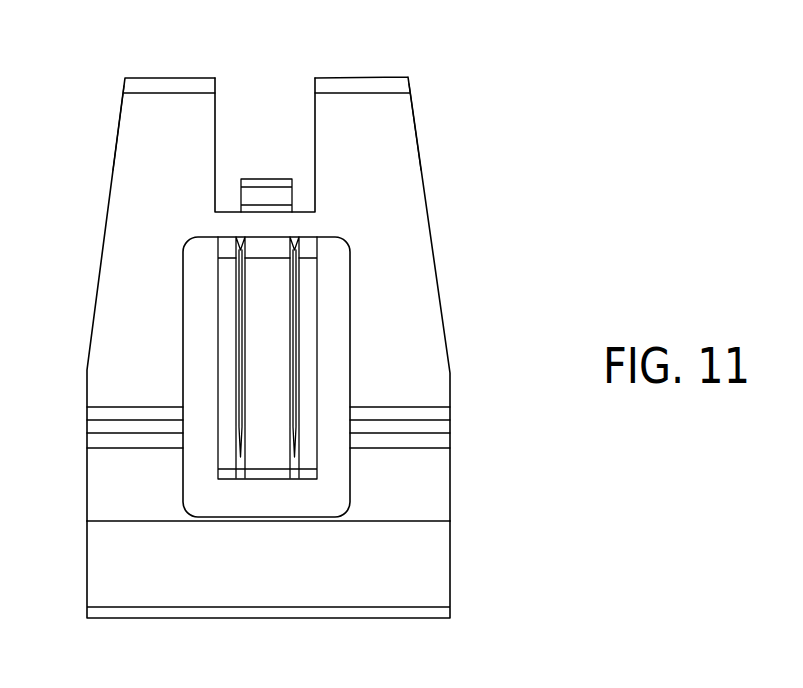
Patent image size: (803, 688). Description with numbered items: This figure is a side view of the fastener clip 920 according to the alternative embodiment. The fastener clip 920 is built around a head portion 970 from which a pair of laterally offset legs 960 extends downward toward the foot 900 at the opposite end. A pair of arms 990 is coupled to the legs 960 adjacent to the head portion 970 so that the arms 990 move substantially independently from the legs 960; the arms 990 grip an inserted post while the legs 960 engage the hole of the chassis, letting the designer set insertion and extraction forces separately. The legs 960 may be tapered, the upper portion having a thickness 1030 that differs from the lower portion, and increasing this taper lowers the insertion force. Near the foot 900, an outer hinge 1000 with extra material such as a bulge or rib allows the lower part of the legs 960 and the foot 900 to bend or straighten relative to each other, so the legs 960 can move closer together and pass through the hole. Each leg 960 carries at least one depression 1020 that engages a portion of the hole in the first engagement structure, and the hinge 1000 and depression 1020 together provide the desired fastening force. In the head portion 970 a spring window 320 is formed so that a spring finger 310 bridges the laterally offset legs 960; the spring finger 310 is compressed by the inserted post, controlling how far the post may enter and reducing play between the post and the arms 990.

The foot 900 is at (268, 588).
The fastener clip 920 is at (100, 90).
The laterally offset legs 960 is at (118, 233).
The head portion 970 is at (415, 75).
The spring window 320 is at (315, 72).
The spring finger 310 is at (265, 178).
The arms 990 is at (263, 307).
The upper leg thickness D1 1030 is at (297, 373).
The outer hinge 1000 is at (452, 405).
The depression 1020 is at (452, 463).